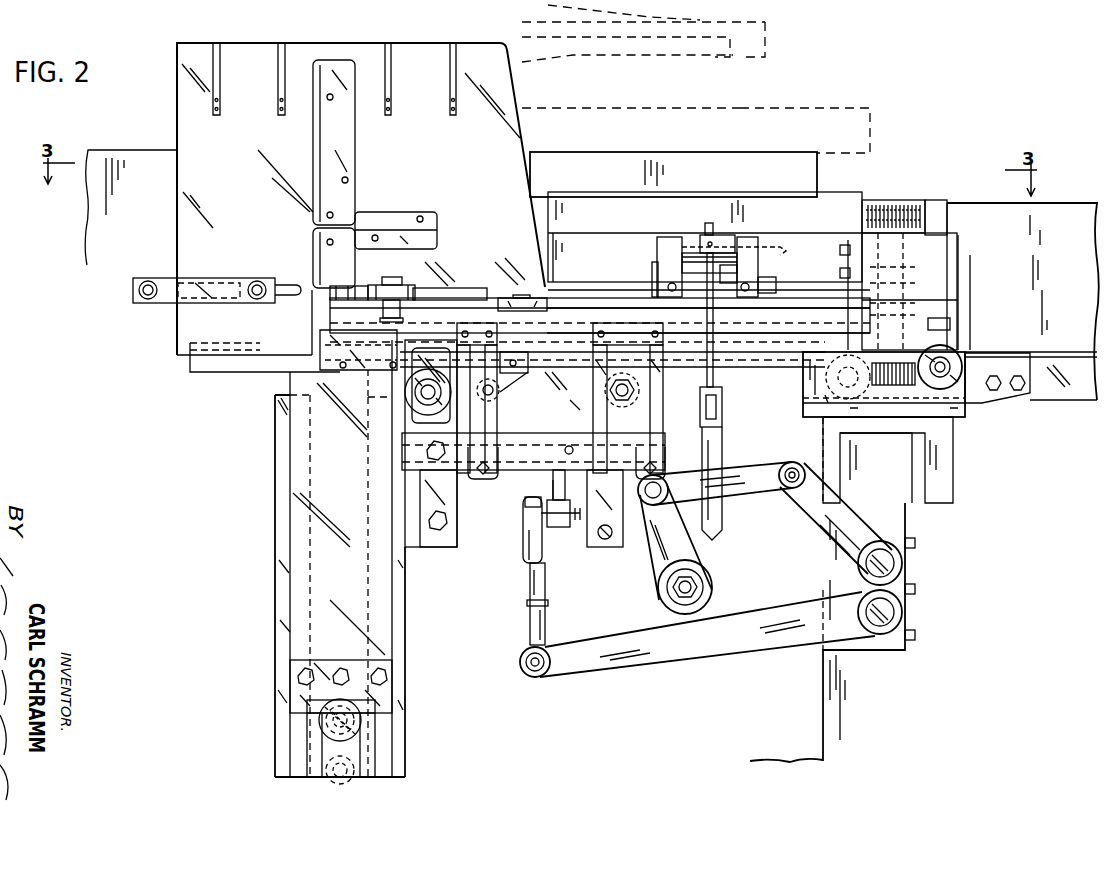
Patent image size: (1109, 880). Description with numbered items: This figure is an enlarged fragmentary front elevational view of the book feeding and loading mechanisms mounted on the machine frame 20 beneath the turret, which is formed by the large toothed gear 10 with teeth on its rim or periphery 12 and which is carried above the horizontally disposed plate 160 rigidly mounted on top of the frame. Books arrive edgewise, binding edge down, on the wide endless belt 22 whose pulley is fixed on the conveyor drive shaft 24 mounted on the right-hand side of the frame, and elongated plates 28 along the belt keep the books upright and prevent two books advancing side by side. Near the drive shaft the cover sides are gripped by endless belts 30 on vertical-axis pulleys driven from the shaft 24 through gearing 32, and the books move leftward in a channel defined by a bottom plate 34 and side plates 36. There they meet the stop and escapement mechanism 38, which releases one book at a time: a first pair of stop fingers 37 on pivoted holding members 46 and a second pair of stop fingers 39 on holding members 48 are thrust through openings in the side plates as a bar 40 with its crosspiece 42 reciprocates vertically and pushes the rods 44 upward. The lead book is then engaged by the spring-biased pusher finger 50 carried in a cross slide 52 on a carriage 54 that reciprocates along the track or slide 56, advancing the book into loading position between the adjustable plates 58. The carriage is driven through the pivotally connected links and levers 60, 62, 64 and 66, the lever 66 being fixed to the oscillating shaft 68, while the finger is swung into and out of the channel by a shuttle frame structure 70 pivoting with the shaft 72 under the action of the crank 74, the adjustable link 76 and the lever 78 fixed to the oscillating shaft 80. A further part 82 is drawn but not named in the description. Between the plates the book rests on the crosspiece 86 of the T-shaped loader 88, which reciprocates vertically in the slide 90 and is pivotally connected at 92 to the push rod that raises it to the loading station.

The turret gear 10 is at (668, 57).
The rim or periphery 12 is at (770, 45).
The horizontally disposed plate 160 is at (826, 108).
The machine frame 20 is at (605, 162).
The endless belt 22 is at (988, 355).
The conveyor drive shaft 24 is at (805, 387).
The elongated plates 28 is at (981, 212).
The endless belts 30 is at (789, 310).
The gearing 32 is at (910, 380).
The bottom plate 34 is at (763, 353).
The side plates 36 is at (838, 205).
The first pair of stop fingers 37 is at (757, 268).
The stop and escapement mechanism 38 is at (727, 223).
The second pair of stop fingers 39 is at (668, 246).
The bar 40 is at (722, 442).
The crosspiece 42 is at (722, 412).
The push rods 44 is at (716, 372).
The holding members 46 is at (755, 290).
The holding members 48 is at (658, 282).
The pusher finger 50 is at (405, 287).
The cross slide 52 is at (417, 290).
The carriage 54 is at (332, 282).
The track or slide 56 is at (372, 370).
The plates 58 is at (180, 232).
The link 60 is at (583, 402).
The link 62 is at (690, 537).
The link 64 is at (729, 483).
The lever 66 is at (818, 520).
The shaft 68 is at (905, 563).
The shuttle frame structure 70 is at (570, 322).
The shaft 72 is at (510, 467).
The crank 74 is at (562, 528).
The adjustable link 76 is at (530, 597).
The lever 78 is at (716, 655).
The shaft 80 is at (905, 612).
The bracket 82 is at (133, 285).
The crosspiece 86 is at (228, 362).
The T-shaped loader 88 is at (290, 477).
The slide 90 is at (275, 555).
The pivotal connection 92 is at (345, 770).